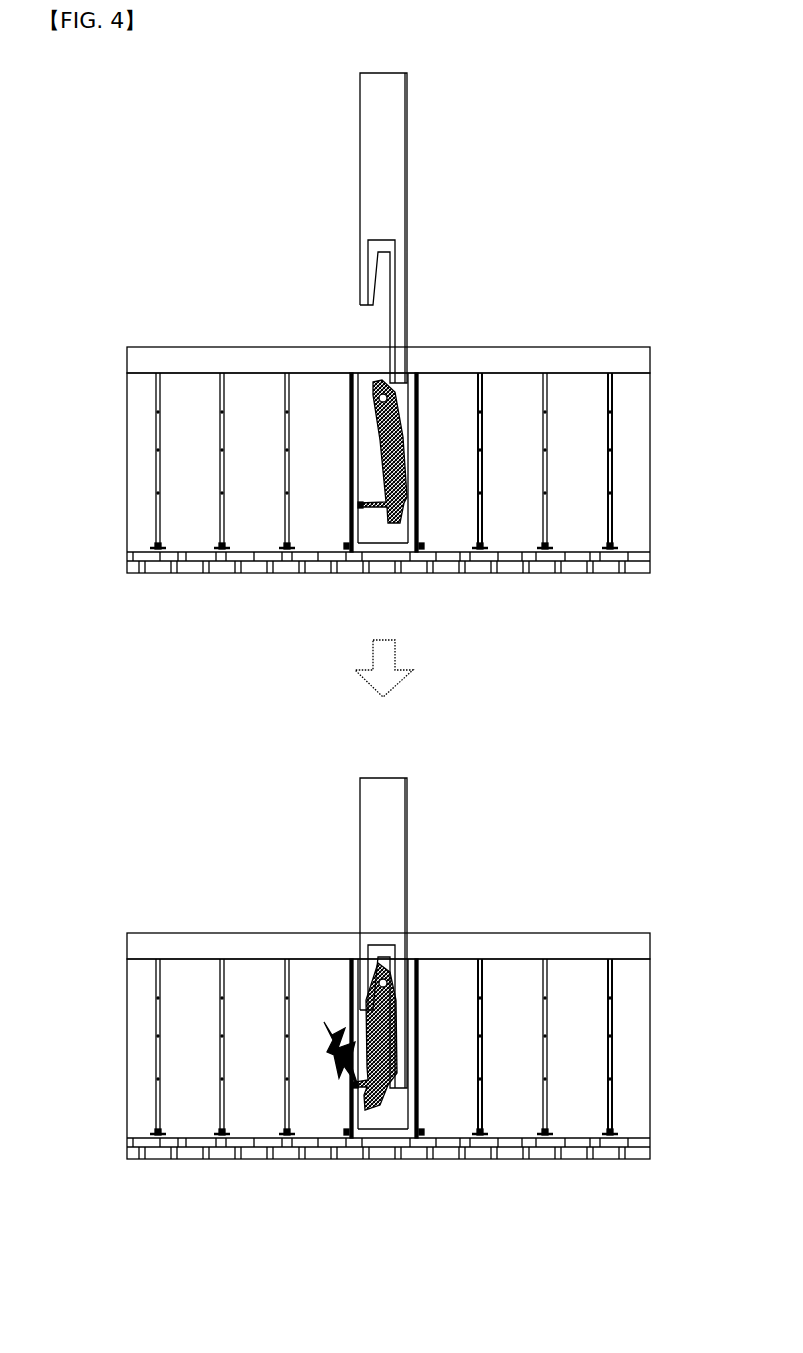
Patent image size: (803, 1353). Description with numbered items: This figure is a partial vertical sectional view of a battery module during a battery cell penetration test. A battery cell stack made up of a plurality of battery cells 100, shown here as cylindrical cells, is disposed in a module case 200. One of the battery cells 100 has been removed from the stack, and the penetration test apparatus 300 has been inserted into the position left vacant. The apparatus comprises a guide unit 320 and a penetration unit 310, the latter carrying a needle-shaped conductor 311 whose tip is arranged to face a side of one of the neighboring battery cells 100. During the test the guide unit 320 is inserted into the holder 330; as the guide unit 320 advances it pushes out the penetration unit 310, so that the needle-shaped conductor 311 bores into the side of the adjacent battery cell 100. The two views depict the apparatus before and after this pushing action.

The battery cell 100 is at (427, 766).
The module case 200 is at (533, 358).
The penetration test apparatus 300 is at (395, 646).
The penetration unit 310 is at (378, 450).
The needle-shaped conductor 311 is at (372, 510).
The guide unit 320 is at (360, 153).
The holder 330 is at (396, 545).